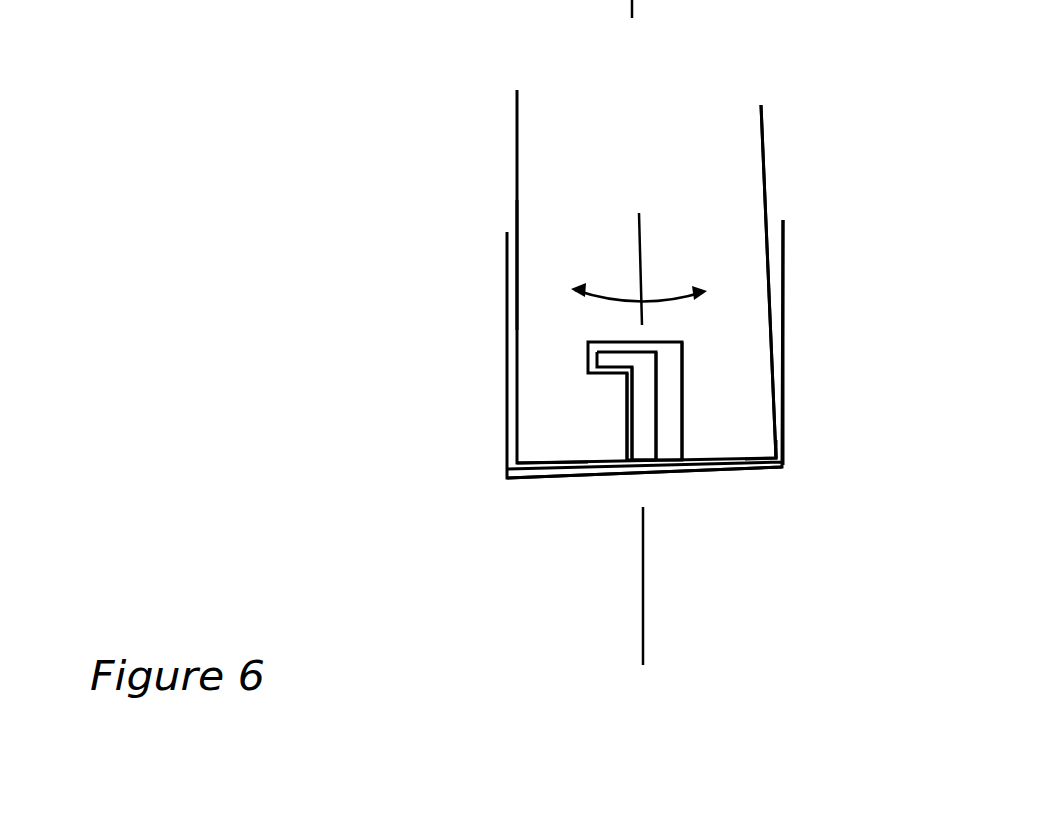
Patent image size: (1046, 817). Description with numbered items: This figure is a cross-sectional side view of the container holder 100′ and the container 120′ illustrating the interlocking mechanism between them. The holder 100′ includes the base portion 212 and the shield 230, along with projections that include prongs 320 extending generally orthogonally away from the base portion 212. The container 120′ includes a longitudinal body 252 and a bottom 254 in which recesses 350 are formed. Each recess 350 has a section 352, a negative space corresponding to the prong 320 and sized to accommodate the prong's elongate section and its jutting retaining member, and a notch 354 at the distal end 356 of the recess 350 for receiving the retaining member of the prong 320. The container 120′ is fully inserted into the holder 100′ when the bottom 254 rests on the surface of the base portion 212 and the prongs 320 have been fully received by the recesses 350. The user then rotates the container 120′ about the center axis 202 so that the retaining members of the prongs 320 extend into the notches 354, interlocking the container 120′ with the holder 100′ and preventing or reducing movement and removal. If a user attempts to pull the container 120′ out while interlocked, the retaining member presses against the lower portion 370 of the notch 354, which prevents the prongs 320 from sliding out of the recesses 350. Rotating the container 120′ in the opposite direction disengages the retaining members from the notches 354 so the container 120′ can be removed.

The container holder 100′ is at (491, 451).
The container 120′ is at (503, 122).
The longitudinal body 252 is at (762, 125).
The shield 230 is at (784, 262).
The base portion 212 is at (745, 469).
The bottom 254 is at (774, 450).
The center axis 202 is at (646, 573).
The distal end 356 is at (567, 316).
The recess 350 is at (695, 349).
The section 352 is at (670, 400).
The notch 354 is at (600, 388).
The lower portion 370 is at (552, 438).
The prong 320 is at (645, 452).